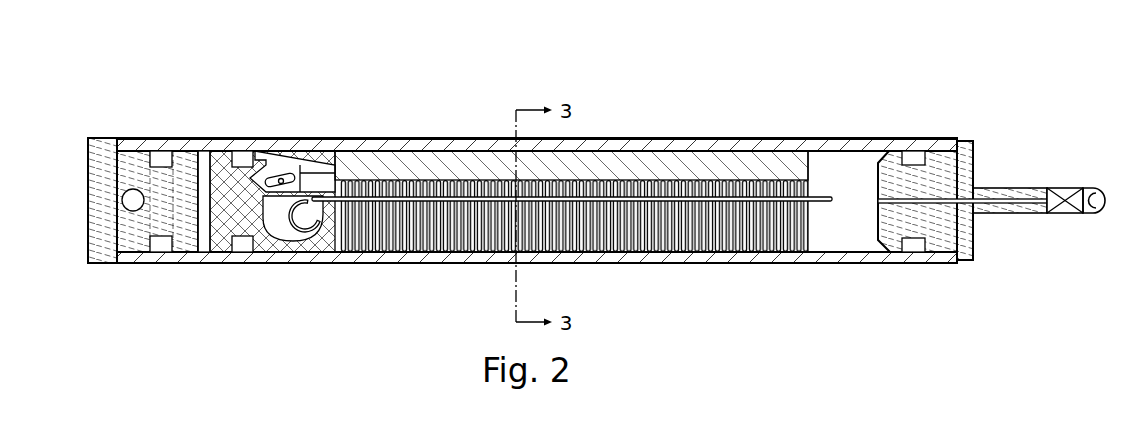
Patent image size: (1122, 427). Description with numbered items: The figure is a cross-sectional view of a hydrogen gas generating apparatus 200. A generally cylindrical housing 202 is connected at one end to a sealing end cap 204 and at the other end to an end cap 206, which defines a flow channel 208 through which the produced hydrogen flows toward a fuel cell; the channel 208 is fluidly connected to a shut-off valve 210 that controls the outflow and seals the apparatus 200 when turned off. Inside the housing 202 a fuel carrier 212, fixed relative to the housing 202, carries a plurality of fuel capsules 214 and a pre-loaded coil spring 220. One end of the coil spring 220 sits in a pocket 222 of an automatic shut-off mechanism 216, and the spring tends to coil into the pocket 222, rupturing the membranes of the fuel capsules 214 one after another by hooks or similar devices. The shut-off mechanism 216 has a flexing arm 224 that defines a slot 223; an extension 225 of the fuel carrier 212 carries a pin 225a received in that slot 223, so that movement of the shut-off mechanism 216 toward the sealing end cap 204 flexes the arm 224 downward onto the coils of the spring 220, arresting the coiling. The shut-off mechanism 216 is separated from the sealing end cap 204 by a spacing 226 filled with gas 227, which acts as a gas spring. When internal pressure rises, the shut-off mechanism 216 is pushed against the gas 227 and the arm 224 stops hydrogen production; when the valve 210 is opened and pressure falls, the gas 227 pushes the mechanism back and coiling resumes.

The gas generating apparatus 200 is at (708, 65).
The housing 202 is at (440, 139).
The sealing end cap 204 is at (100, 152).
The end cap 206 is at (952, 160).
The flow channel 208 is at (1013, 204).
The shut-off valve 210 is at (1067, 213).
The fuel carrier 212 is at (645, 162).
The fuel capsules 214 is at (790, 240).
The automatic shut-off mechanism 216 is at (226, 252).
The coil spring 220 is at (823, 197).
The pocket 222 is at (283, 241).
The slot 223 is at (263, 178).
The flexing arm 224 is at (303, 167).
The extension 225 is at (325, 180).
The pin 225a is at (282, 180).
The spacing 226 is at (204, 153).
The gas 227 is at (203, 244).